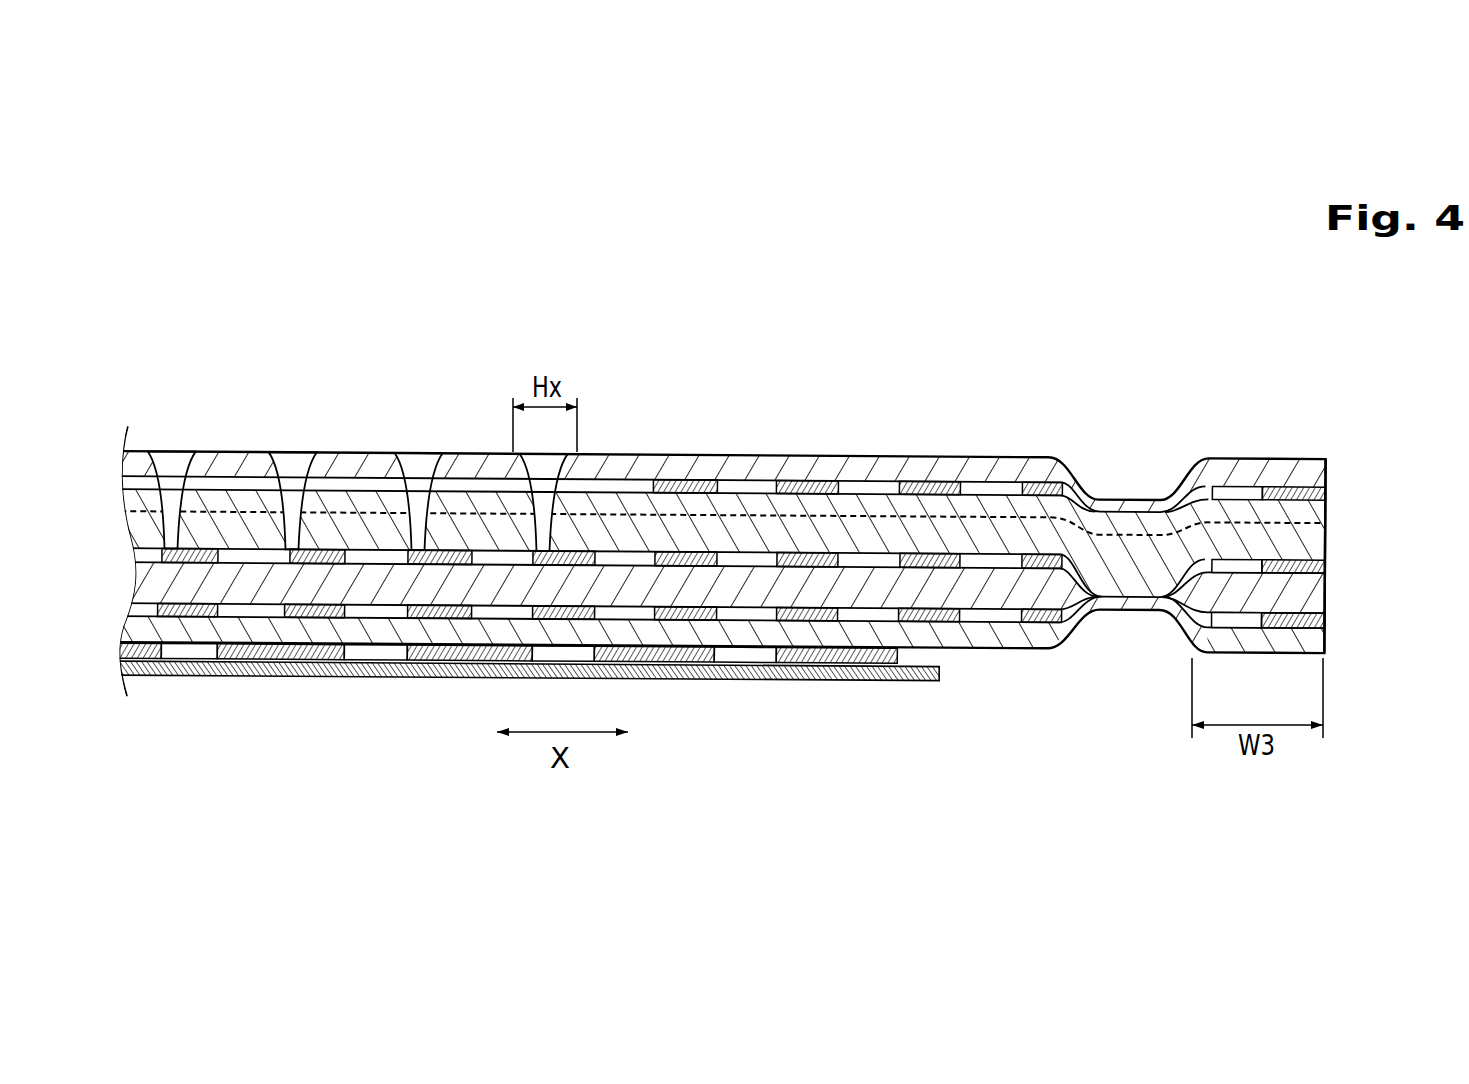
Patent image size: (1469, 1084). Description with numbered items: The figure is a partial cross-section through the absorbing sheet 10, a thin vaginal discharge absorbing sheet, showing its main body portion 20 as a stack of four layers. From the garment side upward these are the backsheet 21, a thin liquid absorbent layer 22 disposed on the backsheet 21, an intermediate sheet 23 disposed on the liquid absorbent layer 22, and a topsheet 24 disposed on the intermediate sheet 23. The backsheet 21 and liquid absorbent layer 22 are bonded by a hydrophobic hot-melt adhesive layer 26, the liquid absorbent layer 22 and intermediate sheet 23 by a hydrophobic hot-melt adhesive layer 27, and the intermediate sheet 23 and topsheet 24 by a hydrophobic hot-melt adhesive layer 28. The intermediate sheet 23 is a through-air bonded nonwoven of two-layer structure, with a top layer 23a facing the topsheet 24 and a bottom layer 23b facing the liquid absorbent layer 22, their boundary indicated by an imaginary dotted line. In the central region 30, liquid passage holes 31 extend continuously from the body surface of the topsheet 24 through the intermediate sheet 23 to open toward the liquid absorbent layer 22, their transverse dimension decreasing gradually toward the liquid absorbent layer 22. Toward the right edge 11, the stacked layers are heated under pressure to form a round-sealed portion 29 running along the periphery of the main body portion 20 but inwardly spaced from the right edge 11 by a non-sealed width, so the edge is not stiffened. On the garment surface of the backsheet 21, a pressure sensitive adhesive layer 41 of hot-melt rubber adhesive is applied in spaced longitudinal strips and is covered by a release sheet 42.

The absorbing sheet 10 is at (1035, 382).
The right edge 11 is at (1342, 581).
The main body portion 20 is at (1368, 462).
The backsheet 21 is at (995, 640).
The liquid absorbent layer 22 is at (868, 615).
The intermediate sheet 23 is at (877, 515).
The top layer 23a is at (598, 495).
The bottom layer 23b is at (623, 540).
The topsheet 24 is at (808, 455).
The hydrophobic hot-melt adhesive layer 26 is at (808, 620).
The hydrophobic hot-melt adhesive layer 27 is at (935, 557).
The hydrophobic hot-melt adhesive layer 28 is at (692, 485).
The round-sealed portion 29 is at (1124, 498).
The central region 30 is at (346, 432).
The liquid passage holes 31 is at (287, 452).
The pressure sensitive adhesive layer 41 is at (440, 678).
The release sheet 42 is at (472, 680).